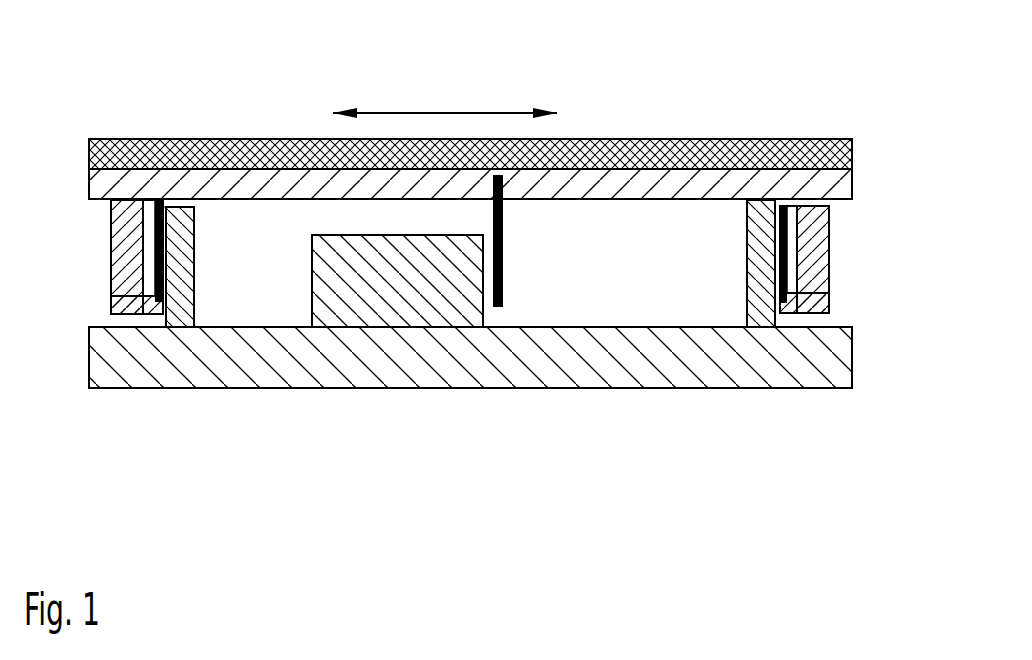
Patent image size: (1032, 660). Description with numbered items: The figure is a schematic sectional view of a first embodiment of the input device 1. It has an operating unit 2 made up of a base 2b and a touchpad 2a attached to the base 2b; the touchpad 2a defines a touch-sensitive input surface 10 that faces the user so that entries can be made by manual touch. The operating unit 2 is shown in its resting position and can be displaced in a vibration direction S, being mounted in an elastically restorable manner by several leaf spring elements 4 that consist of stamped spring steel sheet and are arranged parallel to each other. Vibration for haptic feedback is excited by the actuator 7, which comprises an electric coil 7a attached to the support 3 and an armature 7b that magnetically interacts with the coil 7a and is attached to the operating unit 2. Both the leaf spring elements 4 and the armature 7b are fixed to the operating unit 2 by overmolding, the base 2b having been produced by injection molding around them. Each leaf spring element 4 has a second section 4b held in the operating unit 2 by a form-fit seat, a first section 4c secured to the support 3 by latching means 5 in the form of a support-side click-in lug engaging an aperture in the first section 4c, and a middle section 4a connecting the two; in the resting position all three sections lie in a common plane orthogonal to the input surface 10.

The input device 1 is at (62, 88).
The operating unit 2 is at (506, 137).
The touchpad 2a is at (675, 139).
The base 2b is at (840, 186).
The support 3 is at (181, 410).
The leaf spring element 4 is at (462, 199).
The middle section 4a is at (134, 255).
The second section 4b is at (132, 303).
The first section 4c is at (130, 216).
The latching means 5 is at (166, 192).
The actuator 7 is at (412, 256).
The electric coil 7a is at (393, 303).
The armature 7b is at (505, 283).
The touch-sensitive input surface 10 is at (412, 123).
The vibration direction S is at (457, 112).